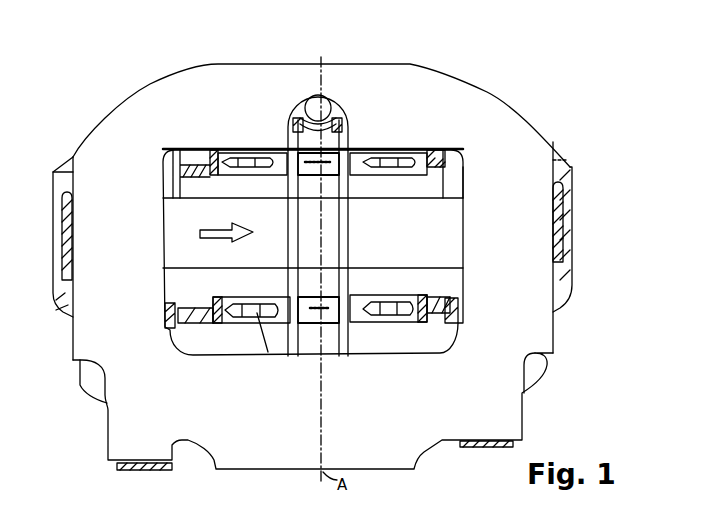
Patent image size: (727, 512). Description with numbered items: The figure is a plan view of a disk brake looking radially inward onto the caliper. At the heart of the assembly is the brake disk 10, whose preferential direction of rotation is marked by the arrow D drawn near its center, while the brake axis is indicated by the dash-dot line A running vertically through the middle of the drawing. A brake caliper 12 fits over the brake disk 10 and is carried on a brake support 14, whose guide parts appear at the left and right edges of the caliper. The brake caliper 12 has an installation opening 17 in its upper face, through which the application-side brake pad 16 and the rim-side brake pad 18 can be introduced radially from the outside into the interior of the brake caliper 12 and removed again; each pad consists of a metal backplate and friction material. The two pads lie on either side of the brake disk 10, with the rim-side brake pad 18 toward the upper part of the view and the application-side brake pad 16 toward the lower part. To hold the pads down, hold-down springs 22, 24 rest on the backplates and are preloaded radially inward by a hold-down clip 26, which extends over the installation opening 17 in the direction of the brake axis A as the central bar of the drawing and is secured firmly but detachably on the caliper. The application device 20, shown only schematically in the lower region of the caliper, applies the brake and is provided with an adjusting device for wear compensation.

The brake disk 10 is at (174, 223).
The brake caliper 12 is at (466, 96).
The brake support 14 is at (573, 233).
The application-side brake pad 16 is at (433, 286).
The installation opening 17 is at (460, 227).
The rim-side brake pad 18 is at (193, 180).
The application device 20 is at (365, 337).
The hold-down spring 22 is at (282, 316).
The hold-down spring 24 is at (285, 158).
The hold-down clip 26 is at (350, 147).